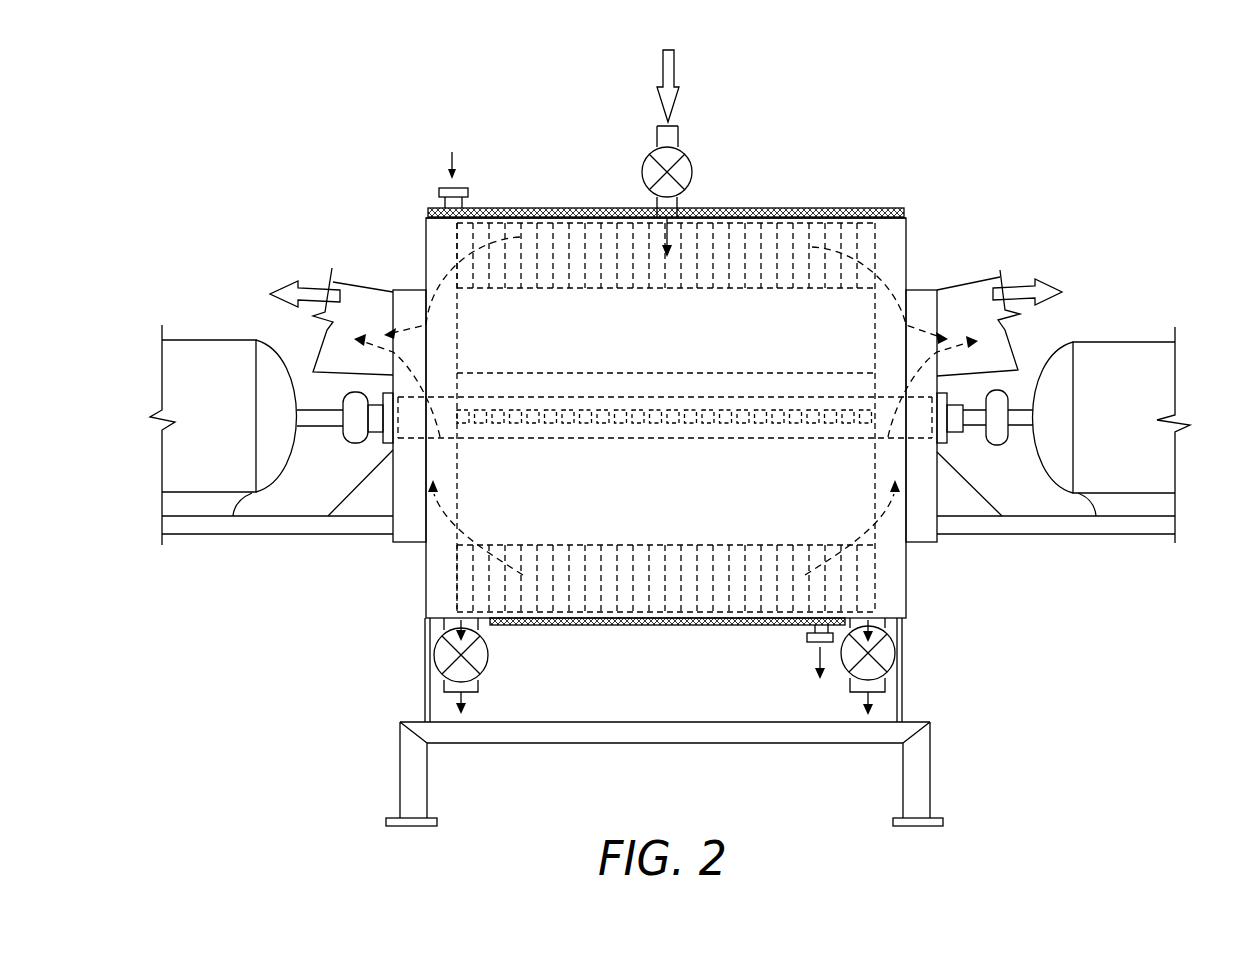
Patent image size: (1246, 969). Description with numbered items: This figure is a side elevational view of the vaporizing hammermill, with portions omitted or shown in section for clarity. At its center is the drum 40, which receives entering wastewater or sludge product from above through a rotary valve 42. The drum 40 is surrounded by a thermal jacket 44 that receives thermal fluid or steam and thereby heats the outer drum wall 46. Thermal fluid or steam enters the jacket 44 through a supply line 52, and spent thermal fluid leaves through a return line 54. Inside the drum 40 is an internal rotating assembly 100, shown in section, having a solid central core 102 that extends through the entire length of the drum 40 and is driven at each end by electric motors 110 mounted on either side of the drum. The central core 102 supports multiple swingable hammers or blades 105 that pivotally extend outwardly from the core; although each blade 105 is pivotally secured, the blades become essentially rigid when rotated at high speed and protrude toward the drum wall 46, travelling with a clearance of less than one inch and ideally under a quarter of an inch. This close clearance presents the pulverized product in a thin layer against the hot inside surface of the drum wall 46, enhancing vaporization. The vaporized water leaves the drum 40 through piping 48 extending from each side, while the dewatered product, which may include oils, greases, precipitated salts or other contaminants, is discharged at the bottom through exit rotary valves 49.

The drum 40 is at (768, 172).
The rotary valve 42 is at (683, 165).
The thermal jacket 44 is at (540, 210).
The outer drum wall 46 is at (878, 210).
The piping 48 is at (362, 282).
The exit rotary valves 49 is at (480, 658).
The supply line 52 is at (468, 190).
The return line 54 is at (815, 645).
The internal rotating assembly 100 is at (1029, 202).
The solid central core 102 is at (480, 527).
The swingable hammers or blades 105 is at (465, 600).
The electric motors 110 is at (200, 355).